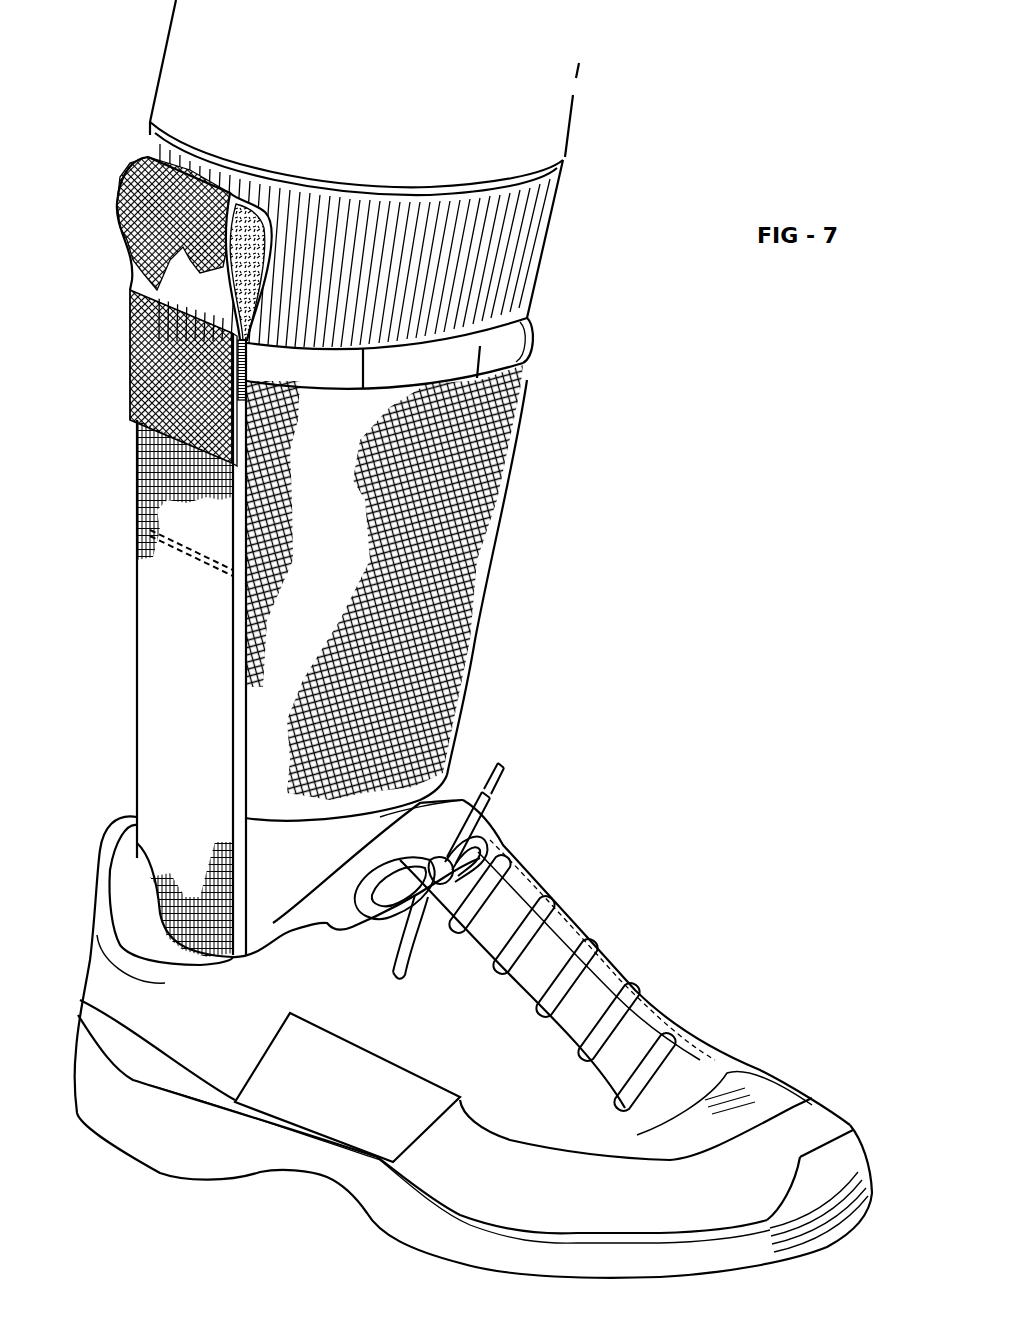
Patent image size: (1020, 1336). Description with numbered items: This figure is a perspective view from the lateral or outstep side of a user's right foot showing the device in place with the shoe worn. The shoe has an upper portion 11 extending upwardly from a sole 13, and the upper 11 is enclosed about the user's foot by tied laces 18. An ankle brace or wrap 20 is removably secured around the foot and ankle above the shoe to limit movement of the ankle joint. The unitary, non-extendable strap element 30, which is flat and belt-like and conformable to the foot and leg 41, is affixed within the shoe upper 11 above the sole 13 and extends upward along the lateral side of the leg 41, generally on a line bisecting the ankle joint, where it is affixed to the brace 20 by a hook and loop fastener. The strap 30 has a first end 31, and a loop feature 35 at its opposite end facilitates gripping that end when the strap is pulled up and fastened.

The upper portion 11 is at (162, 985).
The sole 13 is at (120, 1113).
The laces 18 is at (483, 832).
The ankle brace or wrap 20 is at (532, 337).
The strap element 30 is at (158, 652).
The first end 31 is at (145, 157).
The loop feature 35 is at (247, 240).
The leg 41 is at (567, 137).